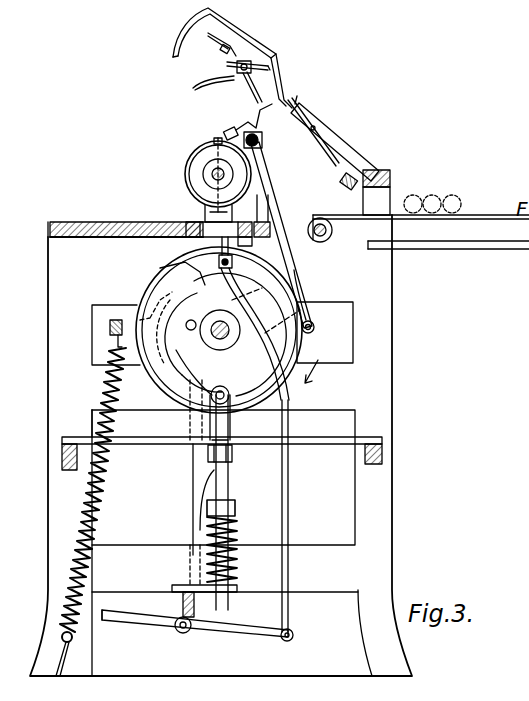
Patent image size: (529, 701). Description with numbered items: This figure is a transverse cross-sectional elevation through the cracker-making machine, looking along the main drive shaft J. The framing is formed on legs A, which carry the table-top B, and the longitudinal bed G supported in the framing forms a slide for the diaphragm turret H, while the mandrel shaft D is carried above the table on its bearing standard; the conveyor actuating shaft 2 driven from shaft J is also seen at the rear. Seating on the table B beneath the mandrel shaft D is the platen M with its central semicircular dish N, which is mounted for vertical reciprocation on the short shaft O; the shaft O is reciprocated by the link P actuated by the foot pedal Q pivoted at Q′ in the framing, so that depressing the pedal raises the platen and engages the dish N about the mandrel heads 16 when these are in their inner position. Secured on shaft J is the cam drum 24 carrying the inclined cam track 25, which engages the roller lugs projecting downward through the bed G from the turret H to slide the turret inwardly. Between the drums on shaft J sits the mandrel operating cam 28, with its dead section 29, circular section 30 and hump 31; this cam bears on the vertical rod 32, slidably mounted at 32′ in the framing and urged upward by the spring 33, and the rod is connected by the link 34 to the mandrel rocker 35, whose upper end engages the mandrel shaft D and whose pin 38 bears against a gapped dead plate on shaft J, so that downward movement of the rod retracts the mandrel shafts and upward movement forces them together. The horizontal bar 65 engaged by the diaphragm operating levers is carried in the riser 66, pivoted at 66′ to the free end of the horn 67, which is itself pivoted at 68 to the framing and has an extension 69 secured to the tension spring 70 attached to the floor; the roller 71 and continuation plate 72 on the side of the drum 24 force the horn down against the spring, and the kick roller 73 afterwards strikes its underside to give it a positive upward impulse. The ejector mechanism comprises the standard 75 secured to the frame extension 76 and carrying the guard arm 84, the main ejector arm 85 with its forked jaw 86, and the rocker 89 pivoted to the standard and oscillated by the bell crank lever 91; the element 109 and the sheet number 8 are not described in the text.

The actuating shaft 2 is at (329, 240).
The sheet number 8 is at (327, 689).
The mandrel heads 16 is at (528, 530).
The cam drum 24 is at (203, 412).
The inclined cam track 25 is at (148, 373).
The mandrel operating cam 28 is at (297, 340).
The dead section 29 is at (200, 300).
The circular section 30 is at (268, 304).
The hump 31 is at (229, 403).
The rod 32 is at (230, 487).
The slide mounting 32′ is at (239, 443).
The spring 33 is at (234, 526).
The link 34 is at (208, 492).
The mandrel rocker 35 is at (192, 497).
The pin 38 is at (185, 325).
The horizontal bar 65 is at (258, 143).
The riser 66 is at (265, 172).
The pivot 66′ is at (315, 327).
The horn 67 is at (320, 307).
The pivot 68 is at (152, 274).
The extension 69 is at (110, 327).
The tension spring 70 is at (98, 498).
The roller 71 is at (162, 358).
The continuation plate 72 is at (178, 410).
The kick roller 73 is at (240, 299).
The standard 75 is at (352, 148).
The frame extension 76 is at (392, 178).
The guard arm 84 is at (266, 47).
The main ejector arm 85 is at (248, 90).
The forked jaw 86 is at (216, 34).
The rocker 89 is at (318, 132).
The bell crank lever 91 is at (345, 182).
The key 109 is at (228, 136).
The leg A is at (221, 445).
The table-top B is at (56, 222).
The mandrel shaft D is at (208, 174).
The longitudinal bed G is at (262, 228).
The diaphragm turret H is at (196, 154).
The main drive shaft J is at (243, 338).
The platen M is at (196, 223).
The semicircular dish N is at (202, 213).
The short shaft O is at (233, 266).
The link P is at (290, 482).
The foot pedal Q is at (144, 623).
The pedal pivot Q′ is at (186, 635).